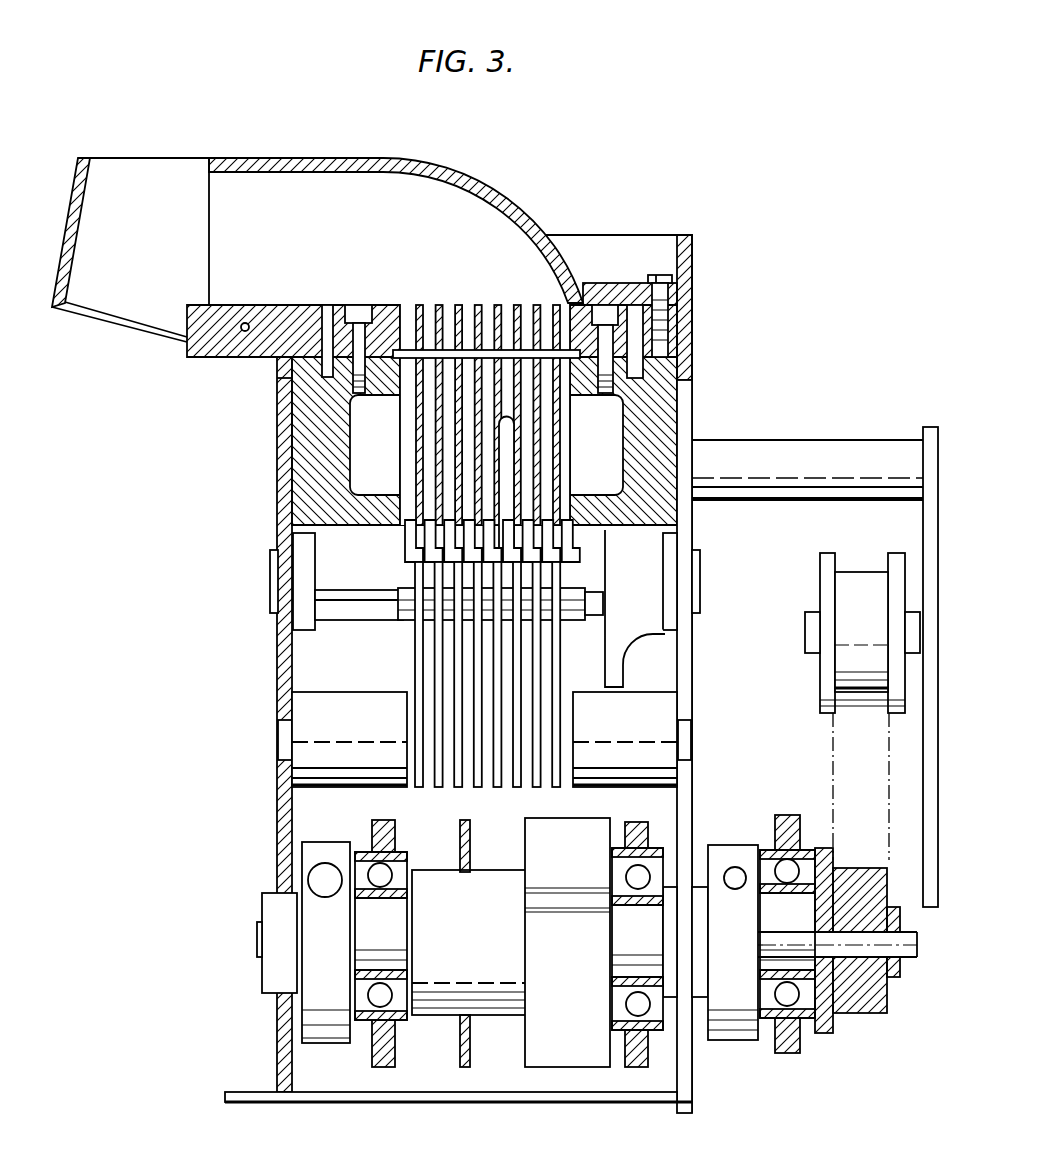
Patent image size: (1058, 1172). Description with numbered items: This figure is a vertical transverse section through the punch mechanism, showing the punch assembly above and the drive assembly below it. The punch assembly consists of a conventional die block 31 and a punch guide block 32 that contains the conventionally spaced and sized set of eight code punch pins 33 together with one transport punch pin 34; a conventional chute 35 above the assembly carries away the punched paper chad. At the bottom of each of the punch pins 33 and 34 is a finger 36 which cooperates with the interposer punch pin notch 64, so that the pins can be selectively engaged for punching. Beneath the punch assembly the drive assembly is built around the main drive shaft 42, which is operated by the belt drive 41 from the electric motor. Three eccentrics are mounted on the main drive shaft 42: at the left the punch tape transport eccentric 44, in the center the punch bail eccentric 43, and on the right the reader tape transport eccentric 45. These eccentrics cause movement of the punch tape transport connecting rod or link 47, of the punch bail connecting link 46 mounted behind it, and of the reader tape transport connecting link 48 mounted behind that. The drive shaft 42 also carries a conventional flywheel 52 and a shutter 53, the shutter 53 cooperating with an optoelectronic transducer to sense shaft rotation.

The die block 31 is at (381, 312).
The punch guide block 32 is at (653, 422).
The code punch pins 33 is at (463, 476).
The transport punch pin 34 is at (506, 380).
The chute 35 is at (250, 188).
The finger 36 is at (407, 561).
The belt drive 41 is at (843, 745).
The main drive shaft 42 is at (917, 950).
The punch bail eccentric 43 is at (637, 933).
The punch tape transport eccentric 44 is at (385, 921).
The reader tape transport eccentric 45 is at (783, 908).
The punch bail connecting link 46 is at (645, 843).
The punch tape transport connecting rod 47 is at (396, 804).
The reader tape transport connecting link 48 is at (788, 816).
The flywheel 52 is at (548, 1053).
The shutter 53 is at (470, 1044).
The interposer punch pin notch 64 is at (407, 581).